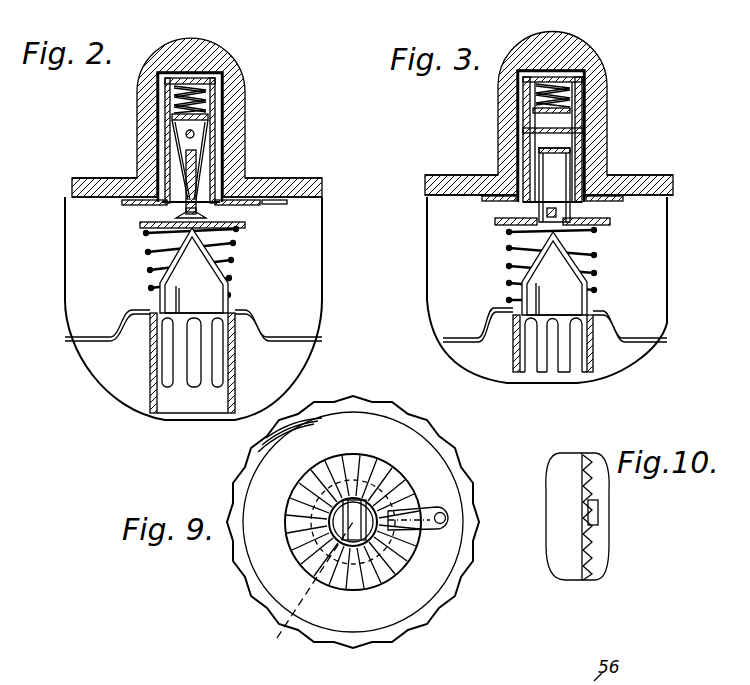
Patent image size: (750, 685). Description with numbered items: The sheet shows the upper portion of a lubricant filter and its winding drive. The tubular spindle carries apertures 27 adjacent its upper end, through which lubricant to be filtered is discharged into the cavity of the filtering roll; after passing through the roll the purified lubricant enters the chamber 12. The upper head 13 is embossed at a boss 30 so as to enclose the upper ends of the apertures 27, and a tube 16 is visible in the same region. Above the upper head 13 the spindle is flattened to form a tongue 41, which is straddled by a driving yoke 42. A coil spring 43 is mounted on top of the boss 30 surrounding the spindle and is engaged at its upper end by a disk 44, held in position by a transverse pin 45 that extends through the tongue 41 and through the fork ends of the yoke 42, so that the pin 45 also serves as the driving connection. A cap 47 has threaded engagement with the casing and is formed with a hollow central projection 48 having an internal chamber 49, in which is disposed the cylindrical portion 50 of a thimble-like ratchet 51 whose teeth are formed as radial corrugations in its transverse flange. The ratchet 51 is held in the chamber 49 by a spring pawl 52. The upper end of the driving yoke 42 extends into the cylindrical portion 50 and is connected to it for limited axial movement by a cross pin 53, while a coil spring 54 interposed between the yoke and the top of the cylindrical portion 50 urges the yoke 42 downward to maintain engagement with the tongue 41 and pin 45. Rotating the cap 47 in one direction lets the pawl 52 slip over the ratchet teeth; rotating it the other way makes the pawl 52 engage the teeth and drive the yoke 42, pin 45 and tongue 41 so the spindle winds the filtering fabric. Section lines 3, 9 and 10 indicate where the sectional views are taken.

In FIG. 2, the section line 3— 3 is at (188, 38).
In FIG. 2, the section line 9— 9 is at (118, 213).
In FIG. 9, the section line 10— 10 is at (355, 600).
In FIG. 2, the chamber 12 is at (130, 397).
In FIG. 3, the chamber 12 is at (505, 372).
In FIG. 2, the upper head 13 is at (283, 336).
In FIG. 3, the upper head 13 is at (643, 330).
In FIG. 2, the tube 16 is at (233, 393).
In FIG. 3, the tube 16 is at (597, 357).
In FIG. 2, the apertures 27 is at (155, 366).
In FIG. 3, the apertures 27 is at (527, 357).
In FIG. 2, the boss 30 is at (253, 310).
In FIG. 3, the boss 30 is at (612, 300).
In FIG. 2, the tongue 41 is at (194, 155).
In FIG. 3, the tongue 41 is at (553, 162).
In FIG. 9, the tongue 41 is at (347, 532).
In FIG. 2, the driving yoke 42 is at (205, 110).
In FIG. 3, the driving yoke 42 is at (558, 120).
In FIG. 9, the driving yoke 42 is at (333, 510).
In FIG. 2, the coil spring 43 is at (233, 275).
In FIG. 3, the coil spring 43 is at (598, 258).
In FIG. 2, the disk 44 is at (248, 228).
In FIG. 3, the disk 44 is at (545, 224).
In FIG. 2, the transverse pin 45 is at (160, 215).
In FIG. 3, the transverse pin 45 is at (537, 210).
In FIG. 2, the cap 47 is at (297, 178).
In FIG. 3, the cap 47 is at (452, 177).
In FIG. 2, the hollow central projection 48 is at (150, 107).
In FIG. 3, the hollow central projection 48 is at (503, 110).
In FIG. 2, the internal chamber 49 is at (163, 82).
In FIG. 3, the internal chamber 49 is at (519, 87).
In FIG. 2, the cylindrical portion 50 is at (167, 128).
In FIG. 3, the cylindrical portion 50 is at (525, 120).
In FIG. 9, the cylindrical portion 50 is at (300, 589).
In FIG. 2, the thimble-like ratchet 51 is at (73, 182).
In FIG. 3, the thimble-like ratchet 51 is at (482, 205).
In FIG. 9, the thimble-like ratchet 51 is at (310, 577).
In FIG. 10, the thimble-like ratchet 51 is at (582, 535).
In FIG. 2, the spring pawl 52 is at (250, 200).
In FIG. 3, the spring pawl 52 is at (552, 198).
In FIG. 9, the spring pawl 52 is at (425, 525).
In FIG. 10, the spring pawl 52 is at (598, 520).
In FIG. 2, the cross pin 53 is at (194, 132).
In FIG. 3, the cross pin 53 is at (590, 130).
In FIG. 2, the coil spring 54 is at (202, 92).
In FIG. 3, the coil spring 54 is at (580, 78).